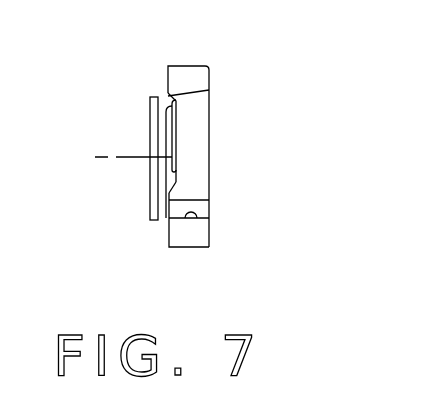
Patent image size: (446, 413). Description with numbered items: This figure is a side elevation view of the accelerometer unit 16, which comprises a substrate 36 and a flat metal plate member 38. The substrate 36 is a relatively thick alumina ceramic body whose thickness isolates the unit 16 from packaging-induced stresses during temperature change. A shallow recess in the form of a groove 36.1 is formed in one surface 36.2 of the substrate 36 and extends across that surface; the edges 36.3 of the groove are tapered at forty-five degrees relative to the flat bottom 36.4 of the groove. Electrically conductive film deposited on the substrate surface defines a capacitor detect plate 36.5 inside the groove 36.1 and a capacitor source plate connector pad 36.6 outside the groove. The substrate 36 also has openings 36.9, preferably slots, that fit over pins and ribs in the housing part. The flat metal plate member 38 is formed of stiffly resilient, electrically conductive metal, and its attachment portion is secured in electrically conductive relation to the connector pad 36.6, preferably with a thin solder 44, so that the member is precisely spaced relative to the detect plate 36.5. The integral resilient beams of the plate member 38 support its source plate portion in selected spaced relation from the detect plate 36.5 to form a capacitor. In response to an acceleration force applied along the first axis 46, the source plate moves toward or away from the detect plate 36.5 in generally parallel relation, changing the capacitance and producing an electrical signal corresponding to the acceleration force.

The accelerometer unit 16 is at (202, 62).
The substrate 36 is at (208, 141).
The groove 36.1 is at (205, 122).
The surface of the substrate 36.2 is at (168, 70).
The edges of the groove 36.3 is at (209, 90).
The flat bottom of the groove 36.4 is at (176, 172).
The capacitor detect plate 36.5 is at (166, 118).
The capacitor source plate connector pad 36.6 is at (164, 214).
The openings 36.9 is at (197, 217).
The flat metal plate member 38 is at (137, 174).
The solder 44 is at (165, 190).
The first axis 46 is at (193, 157).